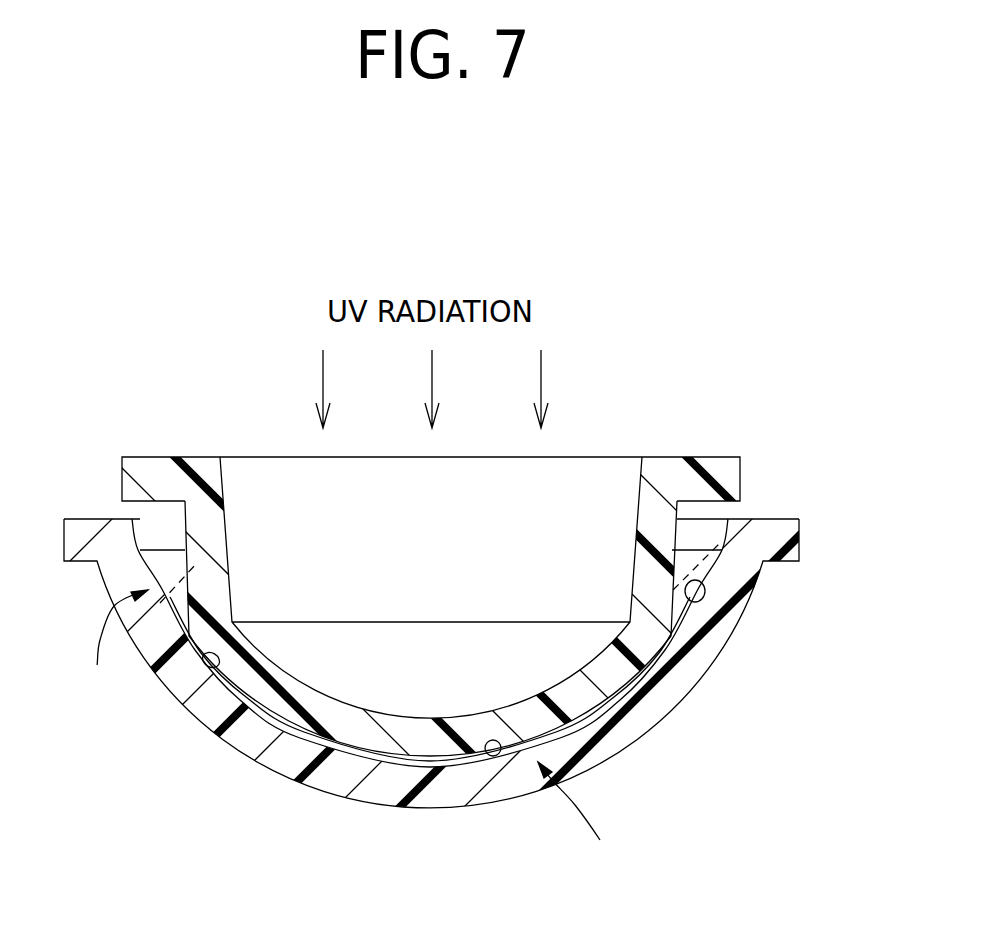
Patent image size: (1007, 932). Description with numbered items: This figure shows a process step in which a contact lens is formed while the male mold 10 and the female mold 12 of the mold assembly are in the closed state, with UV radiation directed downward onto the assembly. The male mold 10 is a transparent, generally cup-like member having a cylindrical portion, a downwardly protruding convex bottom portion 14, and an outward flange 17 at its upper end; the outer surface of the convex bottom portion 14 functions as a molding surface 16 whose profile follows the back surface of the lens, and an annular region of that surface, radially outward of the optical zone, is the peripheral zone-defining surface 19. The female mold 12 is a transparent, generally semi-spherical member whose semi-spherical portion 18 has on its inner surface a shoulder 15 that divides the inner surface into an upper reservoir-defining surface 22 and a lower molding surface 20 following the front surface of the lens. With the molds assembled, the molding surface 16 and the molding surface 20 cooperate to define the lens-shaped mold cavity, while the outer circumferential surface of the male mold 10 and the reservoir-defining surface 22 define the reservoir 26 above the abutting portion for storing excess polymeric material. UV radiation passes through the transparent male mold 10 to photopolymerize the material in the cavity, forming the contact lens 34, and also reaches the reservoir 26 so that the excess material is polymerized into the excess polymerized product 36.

The male mold 10 is at (640, 405).
The female mold 12 is at (826, 536).
The convex bottom portion 14 is at (578, 700).
The shoulder 15 is at (207, 672).
The molding surface 16 is at (354, 758).
The outward flange 17 is at (150, 472).
The semi-spherical portion 18 is at (242, 740).
The peripheral zone-defining surface 19 is at (645, 675).
The molding surface 20 is at (488, 757).
The reservoir-defining surface 22 is at (698, 601).
The reservoir 26 is at (710, 530).
The contact lens 34 is at (629, 708).
The excess polymerized product 36 is at (136, 631).